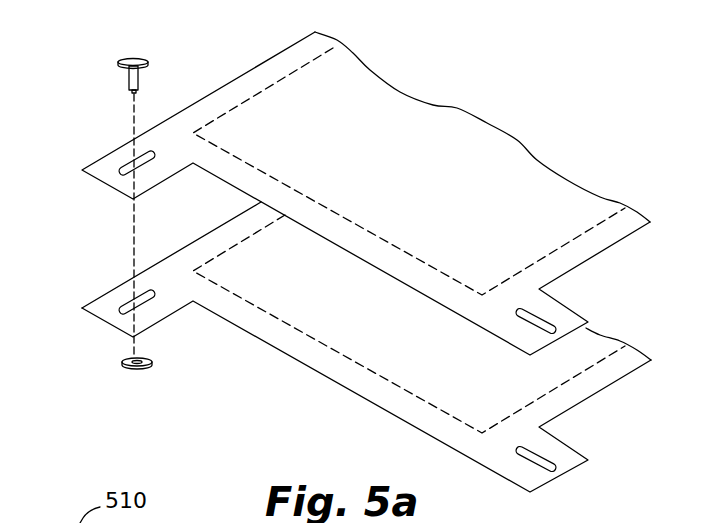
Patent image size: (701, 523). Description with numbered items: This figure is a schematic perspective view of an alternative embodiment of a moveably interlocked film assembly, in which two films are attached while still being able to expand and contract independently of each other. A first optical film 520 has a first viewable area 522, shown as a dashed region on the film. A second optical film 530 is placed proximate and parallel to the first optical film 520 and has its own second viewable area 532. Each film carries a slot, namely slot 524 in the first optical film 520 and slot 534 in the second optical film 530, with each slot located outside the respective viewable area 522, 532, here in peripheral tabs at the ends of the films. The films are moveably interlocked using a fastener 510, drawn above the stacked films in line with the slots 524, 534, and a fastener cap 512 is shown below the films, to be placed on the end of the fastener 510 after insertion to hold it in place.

The fastener 510 is at (129, 80).
The fastener cap 512 is at (123, 363).
The first optical film 520 is at (460, 106).
The first viewable area 522 is at (280, 79).
The slot 524 is at (127, 165).
The second optical film 530 is at (247, 347).
The second viewable area 532 is at (351, 358).
The slot 534 is at (128, 312).